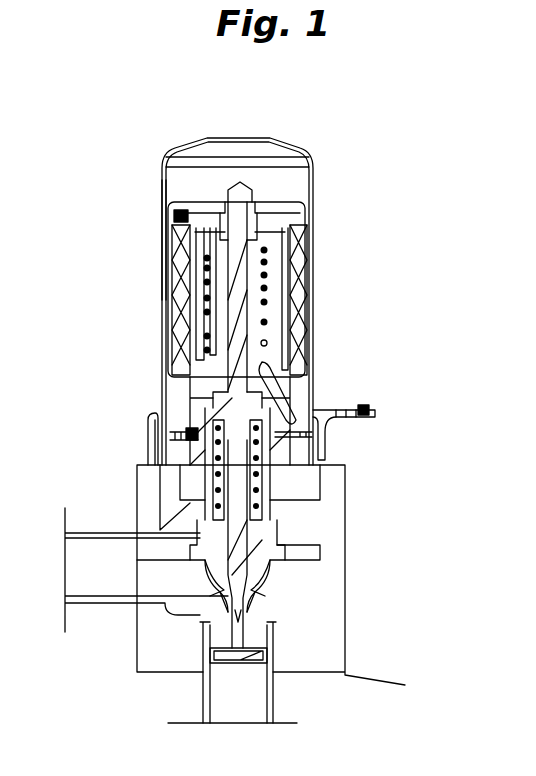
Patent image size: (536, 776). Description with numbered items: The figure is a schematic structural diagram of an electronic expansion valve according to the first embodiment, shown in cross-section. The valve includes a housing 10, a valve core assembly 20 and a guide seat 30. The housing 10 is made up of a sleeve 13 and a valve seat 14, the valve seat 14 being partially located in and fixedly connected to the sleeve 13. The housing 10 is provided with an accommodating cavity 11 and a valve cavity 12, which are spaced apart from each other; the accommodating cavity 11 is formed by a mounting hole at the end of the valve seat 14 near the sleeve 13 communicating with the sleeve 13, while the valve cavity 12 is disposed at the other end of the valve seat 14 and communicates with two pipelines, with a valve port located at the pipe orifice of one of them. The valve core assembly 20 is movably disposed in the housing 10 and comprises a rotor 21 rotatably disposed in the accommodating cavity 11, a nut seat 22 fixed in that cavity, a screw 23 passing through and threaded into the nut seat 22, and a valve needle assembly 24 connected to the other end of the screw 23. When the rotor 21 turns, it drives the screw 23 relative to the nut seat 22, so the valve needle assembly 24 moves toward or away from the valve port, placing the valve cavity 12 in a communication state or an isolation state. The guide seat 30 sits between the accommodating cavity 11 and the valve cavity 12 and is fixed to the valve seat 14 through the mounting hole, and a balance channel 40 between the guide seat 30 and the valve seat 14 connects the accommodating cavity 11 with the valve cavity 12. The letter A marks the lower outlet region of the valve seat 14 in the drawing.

The housing 10 is at (313, 170).
The accommodating cavity 11 is at (287, 182).
The valve cavity 12 is at (217, 592).
The sleeve 13 is at (162, 185).
The valve seat 14 is at (303, 592).
The valve core assembly 20 is at (180, 285).
The rotor 21 is at (300, 248).
The nut seat 22 is at (263, 322).
The screw 23 is at (238, 188).
The valve needle assembly 24 is at (215, 490).
The guide seat 30 is at (272, 522).
The balance channel 40 is at (207, 540).
The outlet A is at (414, 674).